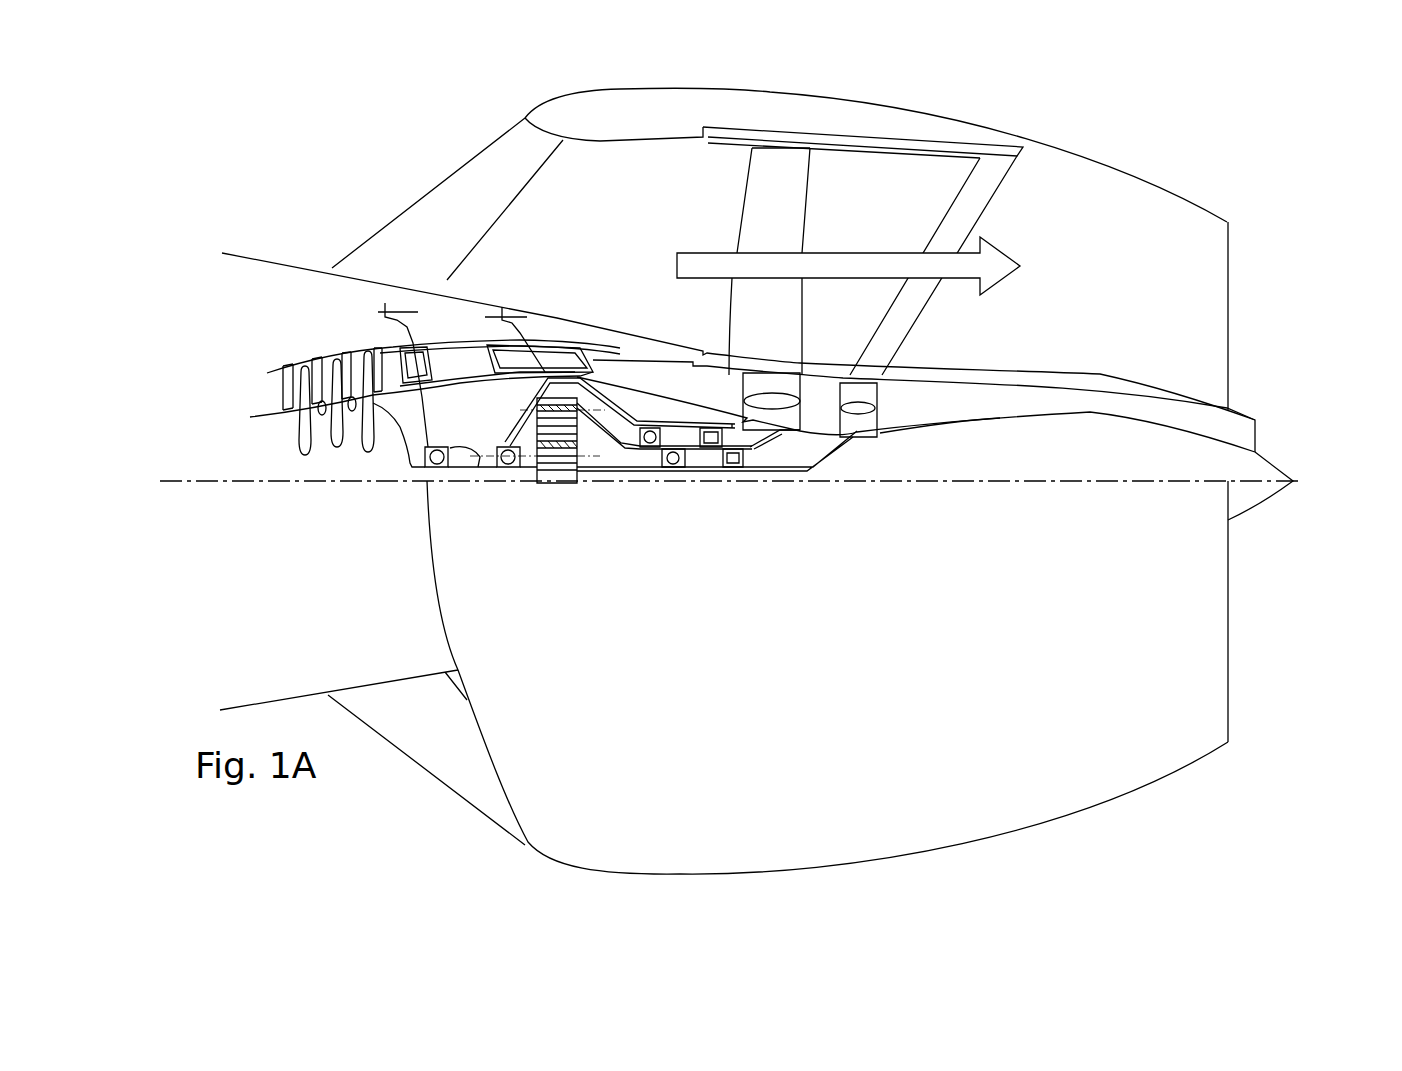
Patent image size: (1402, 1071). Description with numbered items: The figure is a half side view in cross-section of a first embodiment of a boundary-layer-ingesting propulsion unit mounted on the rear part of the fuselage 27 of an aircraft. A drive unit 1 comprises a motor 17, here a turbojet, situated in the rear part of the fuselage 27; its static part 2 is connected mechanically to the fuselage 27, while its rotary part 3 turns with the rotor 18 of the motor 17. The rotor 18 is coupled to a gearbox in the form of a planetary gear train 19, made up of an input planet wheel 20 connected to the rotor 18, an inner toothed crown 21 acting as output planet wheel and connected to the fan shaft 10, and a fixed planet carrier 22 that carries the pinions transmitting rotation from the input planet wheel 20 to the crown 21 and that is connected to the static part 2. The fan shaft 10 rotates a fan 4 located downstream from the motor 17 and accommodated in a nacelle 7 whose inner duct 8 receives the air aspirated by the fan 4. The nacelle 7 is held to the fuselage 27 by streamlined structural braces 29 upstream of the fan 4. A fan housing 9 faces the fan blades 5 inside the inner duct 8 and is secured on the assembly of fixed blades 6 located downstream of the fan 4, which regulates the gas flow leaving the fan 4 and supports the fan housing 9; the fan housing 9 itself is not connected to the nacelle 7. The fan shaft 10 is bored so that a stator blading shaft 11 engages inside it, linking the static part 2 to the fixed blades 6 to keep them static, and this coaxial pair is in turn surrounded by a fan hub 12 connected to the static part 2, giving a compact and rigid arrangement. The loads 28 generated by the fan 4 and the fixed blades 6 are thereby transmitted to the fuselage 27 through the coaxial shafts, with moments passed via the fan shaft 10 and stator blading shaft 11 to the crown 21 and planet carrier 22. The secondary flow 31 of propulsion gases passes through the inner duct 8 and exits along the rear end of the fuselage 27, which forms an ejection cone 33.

The drive unit 1 is at (277, 466).
The static part 2 is at (496, 447).
The rotary part 3 is at (408, 460).
The fan 4 is at (815, 199).
The fan blades 5 is at (777, 158).
The assembly of fixed blades 6 is at (980, 195).
The nacelle 7 is at (607, 107).
The inner duct 8 is at (723, 228).
The fan housing 9 is at (937, 150).
The fan shaft 10 is at (747, 468).
The stator blading shaft 11 is at (802, 473).
The fan hub 12 is at (663, 425).
The motor 17 is at (356, 452).
The rotor 18 is at (425, 445).
The planetary gear train 19 is at (513, 410).
The input planet wheel 20 is at (567, 472).
The inner toothed crown 21 is at (540, 373).
The planet carrier 22 is at (580, 462).
The fuselage 27 is at (228, 282).
The loads 28 is at (700, 455).
The structural braces 29 is at (503, 141).
The secondary flow 31 is at (1003, 270).
The ejection cone 33 is at (1238, 478).